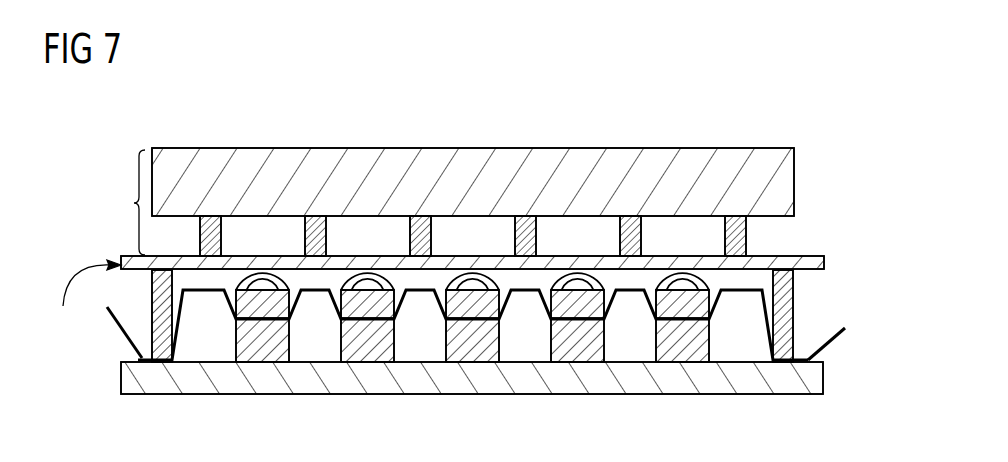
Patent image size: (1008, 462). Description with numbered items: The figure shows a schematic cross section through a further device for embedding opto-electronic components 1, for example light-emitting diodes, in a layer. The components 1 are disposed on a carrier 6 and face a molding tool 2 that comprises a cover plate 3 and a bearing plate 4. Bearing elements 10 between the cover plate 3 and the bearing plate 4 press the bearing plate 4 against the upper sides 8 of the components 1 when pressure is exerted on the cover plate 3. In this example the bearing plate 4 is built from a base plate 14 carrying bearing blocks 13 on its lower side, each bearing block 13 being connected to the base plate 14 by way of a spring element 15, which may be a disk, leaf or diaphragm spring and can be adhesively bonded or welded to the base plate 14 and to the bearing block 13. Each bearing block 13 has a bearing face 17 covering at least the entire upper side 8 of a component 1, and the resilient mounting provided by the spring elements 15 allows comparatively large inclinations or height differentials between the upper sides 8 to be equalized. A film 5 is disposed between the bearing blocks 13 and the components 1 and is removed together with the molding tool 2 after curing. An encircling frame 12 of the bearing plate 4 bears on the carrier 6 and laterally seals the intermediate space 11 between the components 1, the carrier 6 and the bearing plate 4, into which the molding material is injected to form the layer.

The opto-electronic component 1 is at (278, 353).
The molding tool 2 is at (131, 202).
The cover plate 3 is at (780, 181).
The bearing plate 4 is at (87, 299).
The film 5 is at (210, 293).
The carrier 6 is at (813, 383).
The upper side 8 is at (480, 303).
The bearing element 10 is at (210, 226).
The intermediate space 11 is at (635, 352).
The frame 12 is at (163, 352).
The bearing block 13 is at (261, 310).
The base plate 14 is at (592, 262).
The spring element 15 is at (263, 279).
The bearing face 17 is at (362, 305).